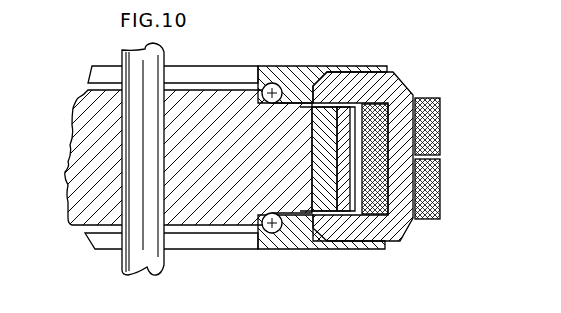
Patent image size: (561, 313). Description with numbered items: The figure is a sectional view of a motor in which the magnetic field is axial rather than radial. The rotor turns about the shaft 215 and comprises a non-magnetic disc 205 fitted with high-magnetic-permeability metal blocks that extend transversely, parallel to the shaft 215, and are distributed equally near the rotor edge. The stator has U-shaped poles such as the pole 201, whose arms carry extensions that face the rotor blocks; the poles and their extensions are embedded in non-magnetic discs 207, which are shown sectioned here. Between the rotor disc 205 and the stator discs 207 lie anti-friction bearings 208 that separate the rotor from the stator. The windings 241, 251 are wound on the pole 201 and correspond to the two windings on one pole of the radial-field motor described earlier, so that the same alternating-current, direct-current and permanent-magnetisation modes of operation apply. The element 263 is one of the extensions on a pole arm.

The pole 201 is at (413, 232).
The non-magnetic disc 205 is at (85, 214).
The non-magnetic discs 207 is at (309, 75).
The anti-friction bearings 208 is at (272, 234).
The shaft 215 is at (166, 258).
The winding 241 is at (435, 125).
The winding 251 is at (432, 188).
The core member 263 is at (350, 237).